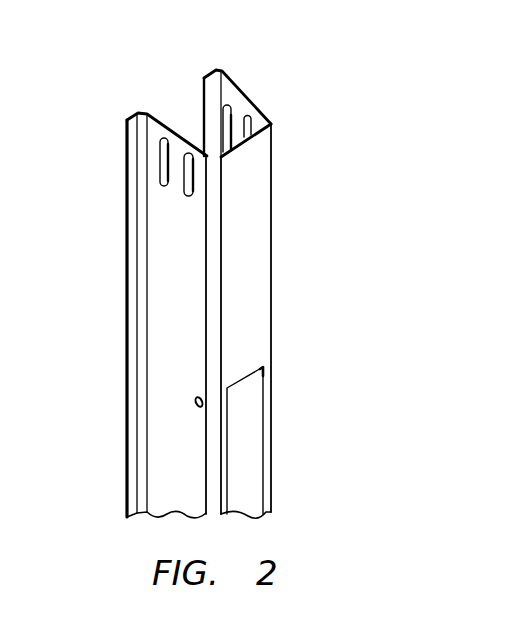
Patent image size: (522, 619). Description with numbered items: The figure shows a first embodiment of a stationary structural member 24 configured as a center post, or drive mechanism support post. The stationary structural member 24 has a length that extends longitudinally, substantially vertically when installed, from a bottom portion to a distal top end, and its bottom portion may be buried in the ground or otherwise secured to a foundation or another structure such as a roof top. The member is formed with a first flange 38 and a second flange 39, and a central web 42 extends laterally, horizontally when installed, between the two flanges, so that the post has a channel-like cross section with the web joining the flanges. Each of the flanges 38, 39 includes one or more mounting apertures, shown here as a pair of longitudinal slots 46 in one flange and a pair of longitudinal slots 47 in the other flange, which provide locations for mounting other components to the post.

The stationary structural member 24 is at (227, 264).
The flange 38 is at (152, 288).
The flange 39 is at (252, 106).
The central web 42 is at (248, 312).
The longitudinal slots 46 is at (247, 116).
The longitudinal slots 47 is at (189, 183).